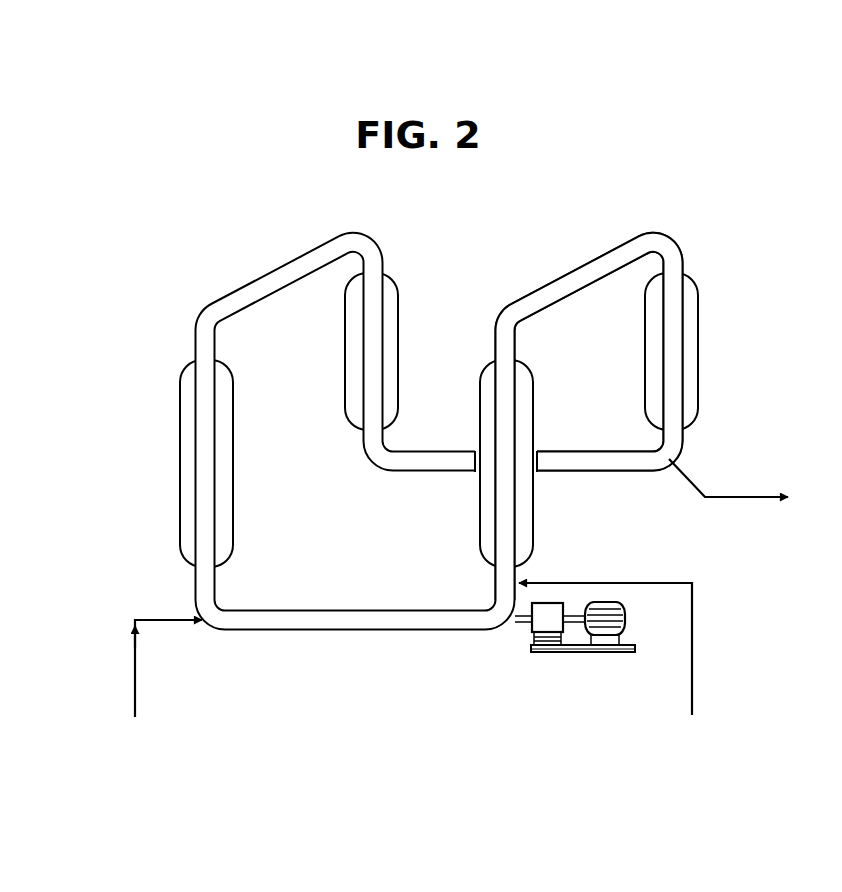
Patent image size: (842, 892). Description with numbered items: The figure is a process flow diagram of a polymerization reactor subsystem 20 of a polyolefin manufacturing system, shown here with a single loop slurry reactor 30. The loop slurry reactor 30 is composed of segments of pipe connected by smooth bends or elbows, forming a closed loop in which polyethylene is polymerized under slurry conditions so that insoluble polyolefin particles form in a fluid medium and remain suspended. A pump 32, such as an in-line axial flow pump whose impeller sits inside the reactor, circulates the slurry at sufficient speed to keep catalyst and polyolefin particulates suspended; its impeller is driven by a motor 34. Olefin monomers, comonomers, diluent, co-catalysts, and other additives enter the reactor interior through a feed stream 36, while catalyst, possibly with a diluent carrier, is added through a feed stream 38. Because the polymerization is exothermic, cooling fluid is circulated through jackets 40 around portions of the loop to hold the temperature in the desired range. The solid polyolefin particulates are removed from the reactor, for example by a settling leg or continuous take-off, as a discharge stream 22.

The polymerization reactor subsystem 20 is at (276, 256).
The discharge stream 22 is at (693, 485).
The loop slurry reactor 30 is at (569, 267).
The pump 32 is at (531, 633).
The motor 34 is at (622, 628).
The feed stream 36 is at (695, 652).
The feed stream 38 is at (138, 671).
The jackets 40 is at (181, 467).